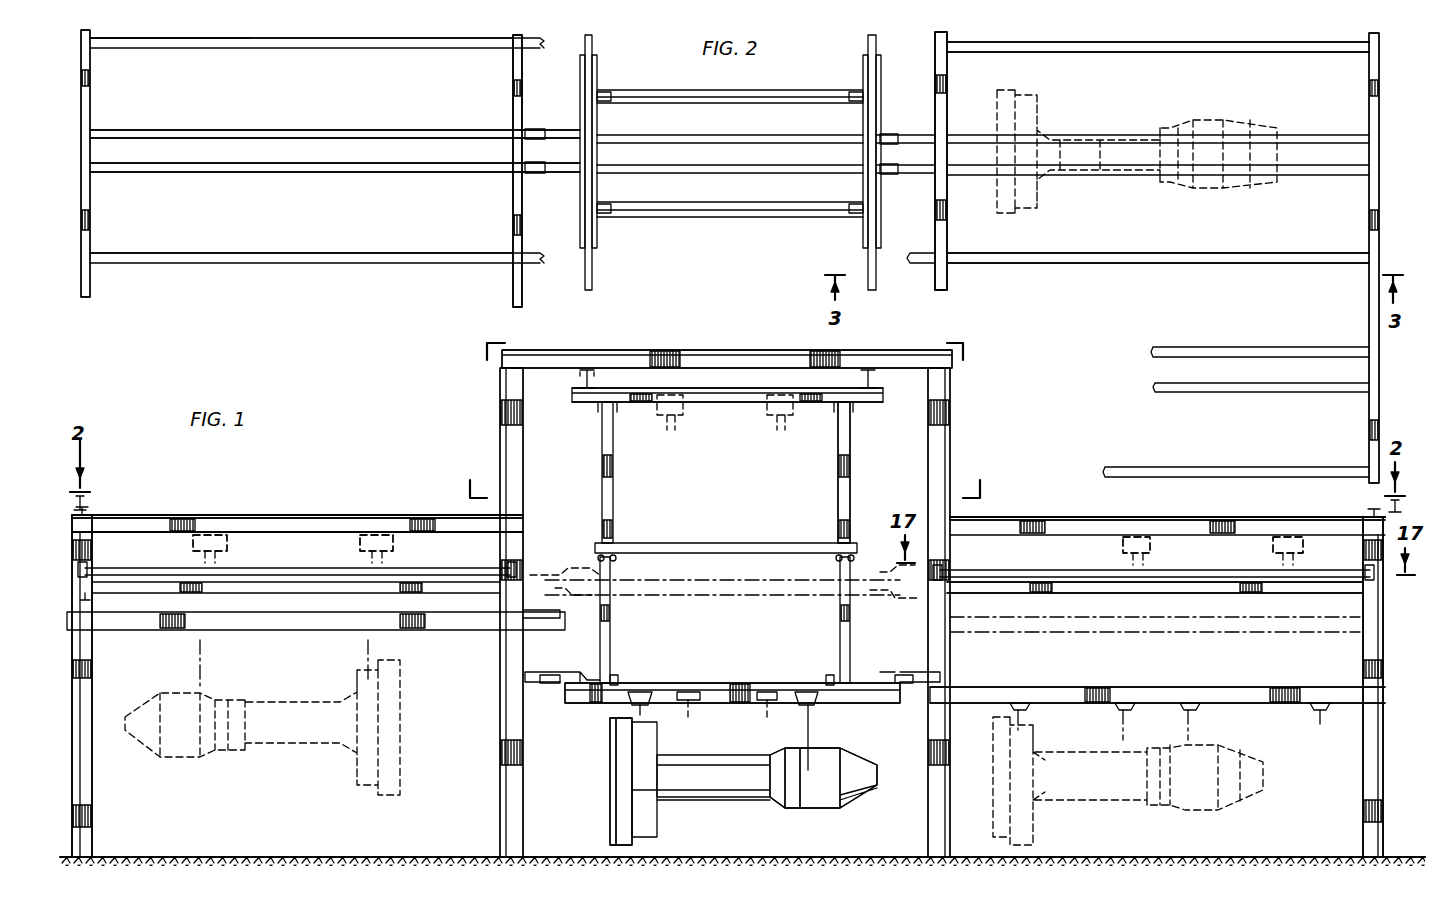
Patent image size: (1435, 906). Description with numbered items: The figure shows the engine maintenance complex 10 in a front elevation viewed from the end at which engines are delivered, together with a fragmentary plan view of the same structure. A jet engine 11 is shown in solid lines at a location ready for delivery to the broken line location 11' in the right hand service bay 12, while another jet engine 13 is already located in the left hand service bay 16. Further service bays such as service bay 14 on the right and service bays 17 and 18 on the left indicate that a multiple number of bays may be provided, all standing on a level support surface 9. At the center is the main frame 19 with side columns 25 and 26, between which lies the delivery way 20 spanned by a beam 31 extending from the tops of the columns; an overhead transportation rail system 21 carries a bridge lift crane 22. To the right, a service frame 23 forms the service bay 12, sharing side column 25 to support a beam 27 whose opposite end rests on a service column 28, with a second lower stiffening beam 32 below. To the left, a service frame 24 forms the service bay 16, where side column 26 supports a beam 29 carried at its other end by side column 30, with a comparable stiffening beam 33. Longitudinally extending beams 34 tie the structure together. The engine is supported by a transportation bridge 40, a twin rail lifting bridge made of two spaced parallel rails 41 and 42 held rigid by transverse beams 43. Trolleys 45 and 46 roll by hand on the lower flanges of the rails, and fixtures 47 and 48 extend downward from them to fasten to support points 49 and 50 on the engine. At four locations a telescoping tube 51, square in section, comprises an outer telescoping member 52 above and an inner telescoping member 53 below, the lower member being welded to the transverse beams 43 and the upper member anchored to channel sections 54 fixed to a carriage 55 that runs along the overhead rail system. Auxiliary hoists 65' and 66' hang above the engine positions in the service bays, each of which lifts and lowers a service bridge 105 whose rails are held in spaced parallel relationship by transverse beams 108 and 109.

In FIG. 1, the level support surface 9 is at (385, 855).
In FIG. 1, the engine maintenance complex 10 is at (436, 462).
In FIG. 1, the jet engine 11 is at (743, 781).
In FIG. 2, the broken line location of jet engine 11' is at (1137, 150).
In FIG. 1, the broken line location of jet engine 11' is at (1128, 781).
In FIG. 2, the right hand service bay 12 is at (1148, 230).
In FIG. 1, the right hand service bay 12 is at (1290, 787).
In FIG. 1, the jet engine 13 is at (298, 743).
In FIG. 2, the service bay 14 is at (1150, 326).
In FIG. 2, the left hand service bay 16 is at (273, 214).
In FIG. 1, the left hand service bay 16 is at (175, 799).
In FIG. 2, the service bay 17 is at (273, 302).
In FIG. 2, the service bay 18 is at (248, 33).
In FIG. 1, the main frame 19 is at (942, 446).
In FIG. 1, the delivery way 20 is at (905, 416).
In FIG. 2, the overhead transportation rail system 21 is at (592, 272).
In FIG. 1, the overhead transportation rail system 21 is at (585, 368).
In FIG. 1, the bridge lift crane 22 is at (848, 432).
In FIG. 1, the service frame 23 is at (1078, 517).
In FIG. 1, the service frame 24 is at (298, 515).
In FIG. 1, the side column 25 is at (945, 468).
In FIG. 1, the side column 26 is at (500, 418).
In FIG. 1, the beam 27 is at (1157, 508).
In FIG. 1, the service column 28 is at (1380, 745).
In FIG. 1, the beam 29 is at (344, 519).
In FIG. 1, the side column 30 is at (85, 800).
In FIG. 2, the beam 31 is at (522, 278).
In FIG. 1, the beam 31 is at (674, 354).
In FIG. 2, the lower stiffening beam 32 is at (1215, 52).
In FIG. 1, the lower stiffening beam 32 is at (1205, 580).
In FIG. 2, the stiffening beam 33 is at (440, 50).
In FIG. 1, the stiffening beam 33 is at (297, 508).
In FIG. 2, the longitudinally extending beams 34 is at (90, 292).
In FIG. 1, the longitudinally extending beams 34 is at (90, 500).
In FIG. 2, the transportation bridge 40 is at (775, 135).
In FIG. 1, the transportation bridge 40 is at (700, 683).
In FIG. 2, the rail 41 is at (691, 165).
In FIG. 1, the rail 41 is at (745, 683).
In FIG. 2, the rail 42 is at (686, 135).
In FIG. 1, the transverse beams 43 is at (599, 676).
In FIG. 1, the trolley 45 is at (640, 692).
In FIG. 1, the trolley 46 is at (800, 692).
In FIG. 1, the fixture 47 is at (657, 732).
In FIG. 1, the fixture 48 is at (805, 732).
In FIG. 1, the support point 49 is at (640, 740).
In FIG. 1, the support point 50 is at (800, 770).
In FIG. 1, the telescoping tube 51 is at (612, 490).
In FIG. 1, the outer telescoping member 52 is at (613, 526).
In FIG. 1, the inner telescoping member 53 is at (612, 616).
In FIG. 1, the channel sections 54 is at (615, 410).
In FIG. 2, the carriage 55 is at (713, 225).
In FIG. 1, the carriage 55 is at (721, 390).
In FIG. 1, the auxiliary hoist 65' is at (724, 637).
In FIG. 1, the auxiliary hoist 66' is at (748, 524).
In FIG. 2, the service bridge 105 is at (348, 138).
In FIG. 1, the service bridge 105 is at (300, 630).
In FIG. 1, the transverse beam 108 is at (945, 682).
In FIG. 1, the transverse beam 109 is at (1360, 682).